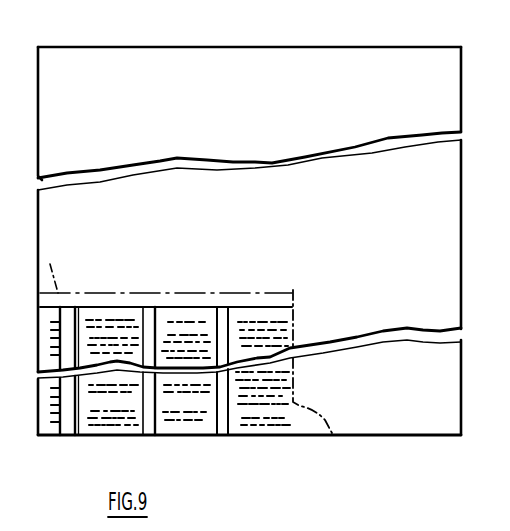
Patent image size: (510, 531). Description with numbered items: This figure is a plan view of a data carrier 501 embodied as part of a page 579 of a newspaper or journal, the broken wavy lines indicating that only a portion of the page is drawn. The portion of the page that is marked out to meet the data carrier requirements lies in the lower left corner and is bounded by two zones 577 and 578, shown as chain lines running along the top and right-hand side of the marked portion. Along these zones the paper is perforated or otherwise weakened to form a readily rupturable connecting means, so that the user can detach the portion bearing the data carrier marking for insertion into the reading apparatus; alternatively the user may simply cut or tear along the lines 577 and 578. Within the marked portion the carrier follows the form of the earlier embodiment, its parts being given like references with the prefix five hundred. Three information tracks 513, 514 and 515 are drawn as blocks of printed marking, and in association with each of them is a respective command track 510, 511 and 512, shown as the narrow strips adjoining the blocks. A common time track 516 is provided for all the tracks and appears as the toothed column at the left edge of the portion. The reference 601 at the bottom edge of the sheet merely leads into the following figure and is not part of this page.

The data carrier 501 is at (237, 48).
The zone 577 is at (166, 263).
The page 579 is at (275, 237).
The common time track 516 is at (42, 437).
The command track 510 is at (78, 436).
The information track 513 is at (125, 436).
The command track 511 is at (152, 430).
The information track 514 is at (197, 432).
The command track 512 is at (225, 430).
The information track 515 is at (275, 436).
The zone 578 is at (328, 384).
The wafer of next figure 601 is at (337, 512).